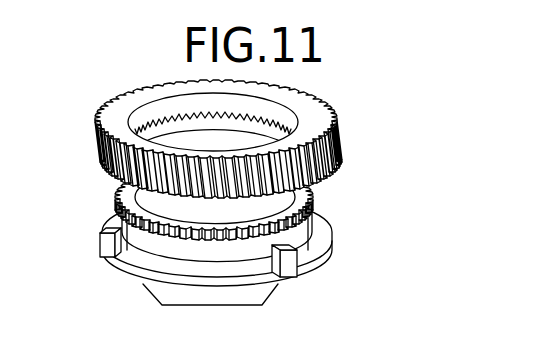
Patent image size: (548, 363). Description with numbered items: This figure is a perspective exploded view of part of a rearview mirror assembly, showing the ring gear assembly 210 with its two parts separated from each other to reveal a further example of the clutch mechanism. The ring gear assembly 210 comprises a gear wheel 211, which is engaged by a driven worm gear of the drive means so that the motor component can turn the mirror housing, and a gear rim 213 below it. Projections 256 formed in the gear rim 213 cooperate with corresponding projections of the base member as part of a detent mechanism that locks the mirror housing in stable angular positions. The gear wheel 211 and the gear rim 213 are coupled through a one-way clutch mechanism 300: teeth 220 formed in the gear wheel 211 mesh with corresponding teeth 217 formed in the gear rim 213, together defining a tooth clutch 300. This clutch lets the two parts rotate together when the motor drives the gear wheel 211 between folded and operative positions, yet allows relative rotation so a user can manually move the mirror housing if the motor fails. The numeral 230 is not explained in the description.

The ring gear assembly 210 is at (344, 188).
The gear wheel 211 is at (97, 133).
The gear rim 213 is at (344, 254).
The gear rim teeth 217 is at (110, 206).
The gear wheel teeth 220 is at (163, 122).
The gear set 230 is at (291, 4).
The projections 256 is at (170, 297).
The one-way clutch mechanism 300 is at (153, 236).